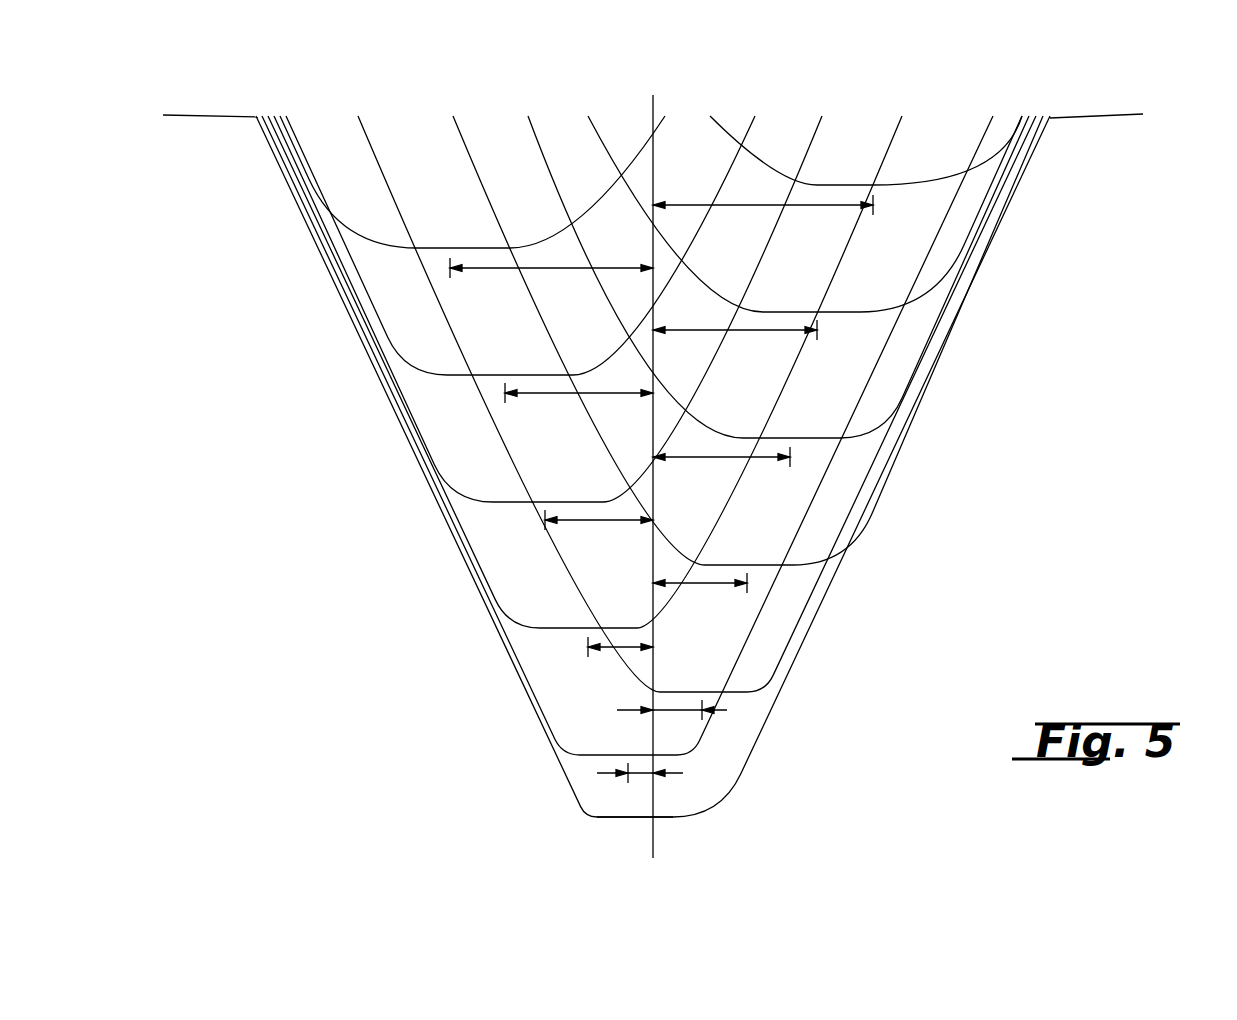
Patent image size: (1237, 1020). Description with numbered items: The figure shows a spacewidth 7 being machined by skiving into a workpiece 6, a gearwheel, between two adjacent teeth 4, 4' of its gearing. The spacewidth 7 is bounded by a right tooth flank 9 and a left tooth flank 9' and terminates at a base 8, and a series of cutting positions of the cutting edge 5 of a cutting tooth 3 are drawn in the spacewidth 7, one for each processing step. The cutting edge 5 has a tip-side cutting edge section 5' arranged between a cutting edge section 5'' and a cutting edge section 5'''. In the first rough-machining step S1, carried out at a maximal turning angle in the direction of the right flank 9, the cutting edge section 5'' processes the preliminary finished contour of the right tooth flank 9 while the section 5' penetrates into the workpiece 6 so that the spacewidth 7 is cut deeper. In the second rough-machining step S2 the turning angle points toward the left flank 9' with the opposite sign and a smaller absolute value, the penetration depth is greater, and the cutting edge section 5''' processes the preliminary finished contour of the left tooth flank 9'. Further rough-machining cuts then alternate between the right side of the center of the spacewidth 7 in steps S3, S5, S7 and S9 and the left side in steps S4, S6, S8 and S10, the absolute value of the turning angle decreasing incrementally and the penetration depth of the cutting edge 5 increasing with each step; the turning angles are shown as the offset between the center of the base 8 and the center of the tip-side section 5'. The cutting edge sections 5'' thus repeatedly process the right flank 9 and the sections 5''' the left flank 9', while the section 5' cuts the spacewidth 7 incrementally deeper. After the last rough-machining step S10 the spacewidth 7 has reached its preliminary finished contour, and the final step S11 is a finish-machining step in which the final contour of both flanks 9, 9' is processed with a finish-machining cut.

The cutting tooth 3 is at (952, 137).
The tooth 4 is at (1108, 148).
The tooth 4' is at (204, 157).
The cutting edge 5 is at (659, 162).
The cutting edge section on the side of the tip 5' is at (665, 185).
The cutting edge section 5'' is at (811, 106).
The cutting edge section 5''' is at (547, 131).
The workpiece 6 is at (1133, 568).
The spacewidth 7 is at (414, 114).
The base of the spacewidth 8 is at (655, 820).
The right tooth flank 9 is at (923, 530).
The left tooth flank 9' is at (333, 484).
The rough-machining step S1 is at (977, 167).
The second rough-machining step S2 is at (380, 240).
The rough-machining step S3 is at (937, 285).
The rough-machining step S4 is at (440, 377).
The rough-machining step S5 is at (872, 425).
The rough-machining step S6 is at (490, 503).
The rough-machining step S7 is at (822, 558).
The rough-machining step S8 is at (540, 628).
The rough-machining step S9 is at (766, 680).
The rough-machining step S10 is at (566, 746).
The finish-machining step S11 is at (706, 810).